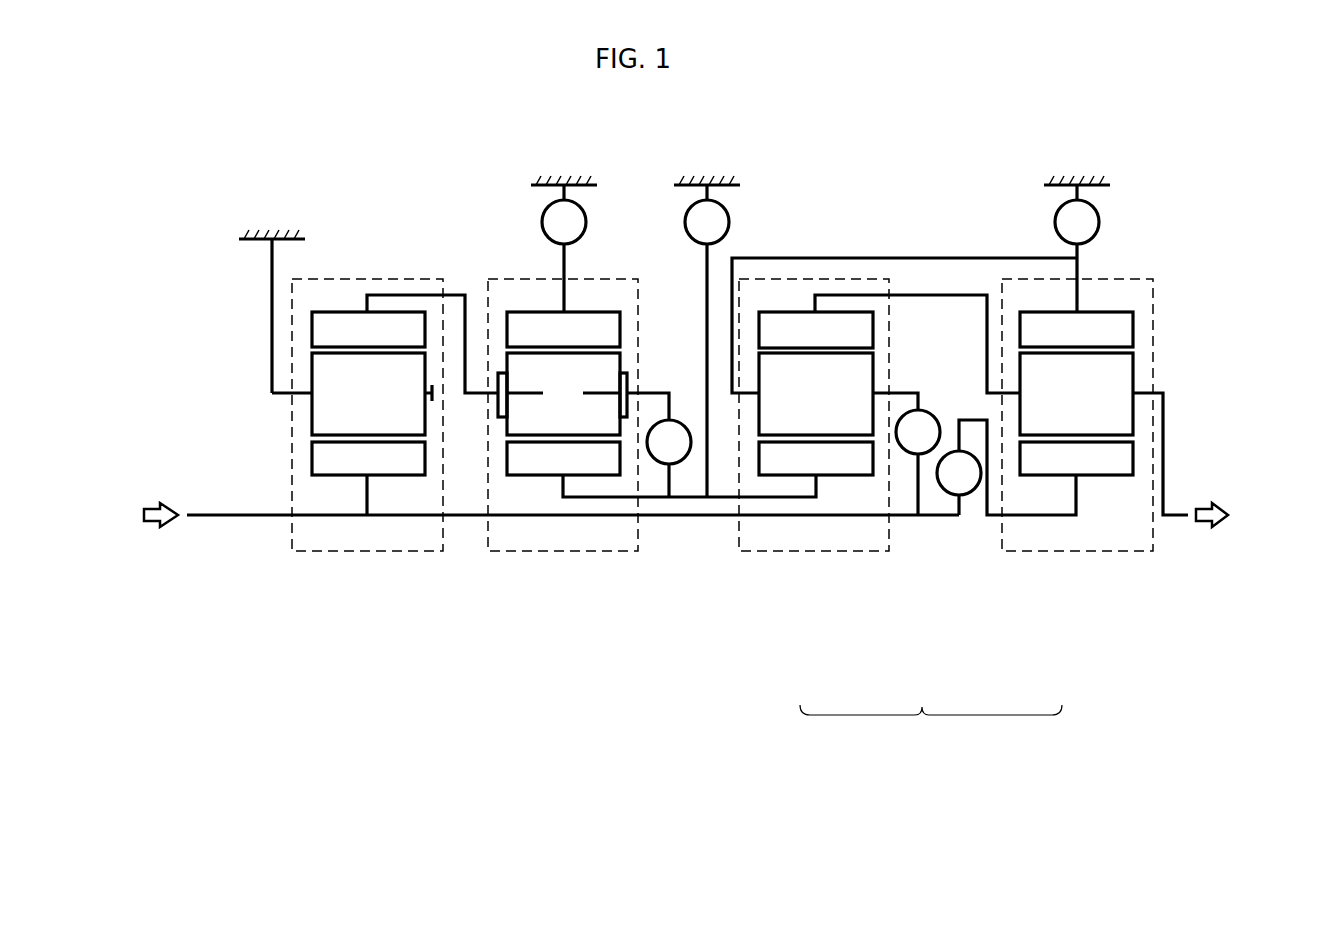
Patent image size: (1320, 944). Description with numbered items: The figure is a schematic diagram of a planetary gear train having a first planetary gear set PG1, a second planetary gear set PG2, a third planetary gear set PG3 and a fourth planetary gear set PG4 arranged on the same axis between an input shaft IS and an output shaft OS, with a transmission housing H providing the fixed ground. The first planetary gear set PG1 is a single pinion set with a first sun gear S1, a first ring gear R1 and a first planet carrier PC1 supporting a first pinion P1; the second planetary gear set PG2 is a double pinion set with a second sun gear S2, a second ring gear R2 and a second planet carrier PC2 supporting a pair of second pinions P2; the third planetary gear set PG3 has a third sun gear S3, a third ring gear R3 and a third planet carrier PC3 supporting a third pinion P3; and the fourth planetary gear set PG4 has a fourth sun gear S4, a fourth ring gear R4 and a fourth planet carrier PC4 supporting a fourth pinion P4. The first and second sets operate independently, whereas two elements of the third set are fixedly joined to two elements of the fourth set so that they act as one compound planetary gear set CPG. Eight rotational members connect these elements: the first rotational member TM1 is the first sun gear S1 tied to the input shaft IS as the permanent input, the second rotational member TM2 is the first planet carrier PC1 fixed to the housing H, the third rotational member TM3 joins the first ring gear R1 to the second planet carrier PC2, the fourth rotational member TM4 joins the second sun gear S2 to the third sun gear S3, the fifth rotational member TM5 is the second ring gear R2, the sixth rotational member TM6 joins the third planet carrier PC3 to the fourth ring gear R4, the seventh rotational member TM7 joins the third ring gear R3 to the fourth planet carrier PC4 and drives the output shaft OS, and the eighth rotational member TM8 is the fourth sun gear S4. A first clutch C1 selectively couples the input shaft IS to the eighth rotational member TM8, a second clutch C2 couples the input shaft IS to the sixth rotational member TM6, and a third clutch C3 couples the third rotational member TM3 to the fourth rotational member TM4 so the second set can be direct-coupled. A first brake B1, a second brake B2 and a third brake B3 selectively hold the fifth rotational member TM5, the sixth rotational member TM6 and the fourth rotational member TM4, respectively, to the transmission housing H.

The transmission housing H is at (275, 232).
The first planetary gear set PG1 is at (367, 490).
The second planetary gear set PG2 is at (563, 490).
The third planetary gear set PG3 is at (814, 490).
The fourth planetary gear set PG4 is at (1077, 490).
The compound planetary gear set CPG is at (931, 728).
The first ring gear R1 is at (368, 329).
The first pinion P1 is at (372, 394).
The first sun gear S1 is at (368, 458).
The second ring gear R2 is at (563, 329).
The second pinions P2 is at (562, 394).
The second sun gear S2 is at (563, 458).
The third ring gear R3 is at (816, 330).
The third pinion P3 is at (816, 394).
The third sun gear S3 is at (816, 458).
The fourth ring gear R4 is at (1076, 329).
The fourth pinion P4 is at (1076, 394).
The fourth sun gear S4 is at (1076, 458).
The first planet carrier PC1 is at (243, 338).
The second planet carrier PC2 is at (663, 392).
The third planet carrier PC3 is at (902, 393).
The fourth planet carrier PC4 is at (1160, 392).
The first rotational member TM1 is at (367, 495).
The second rotational member TM2 is at (282, 395).
The third rotational member TM3 is at (451, 293).
The fourth rotational member TM4 is at (683, 499).
The fifth rotational member TM5 is at (567, 270).
The sixth rotational member TM6 is at (1005, 257).
The seventh rotational member TM7 is at (919, 293).
The eighth rotational member TM8 is at (1022, 518).
The first brake B1 is at (564, 214).
The second brake B2 is at (1077, 214).
The third brake B3 is at (707, 341).
The first clutch C1 is at (959, 483).
The second clutch C2 is at (918, 462).
The third clutch C3 is at (669, 458).
The input shaft IS is at (203, 518).
The output shaft OS is at (1172, 518).